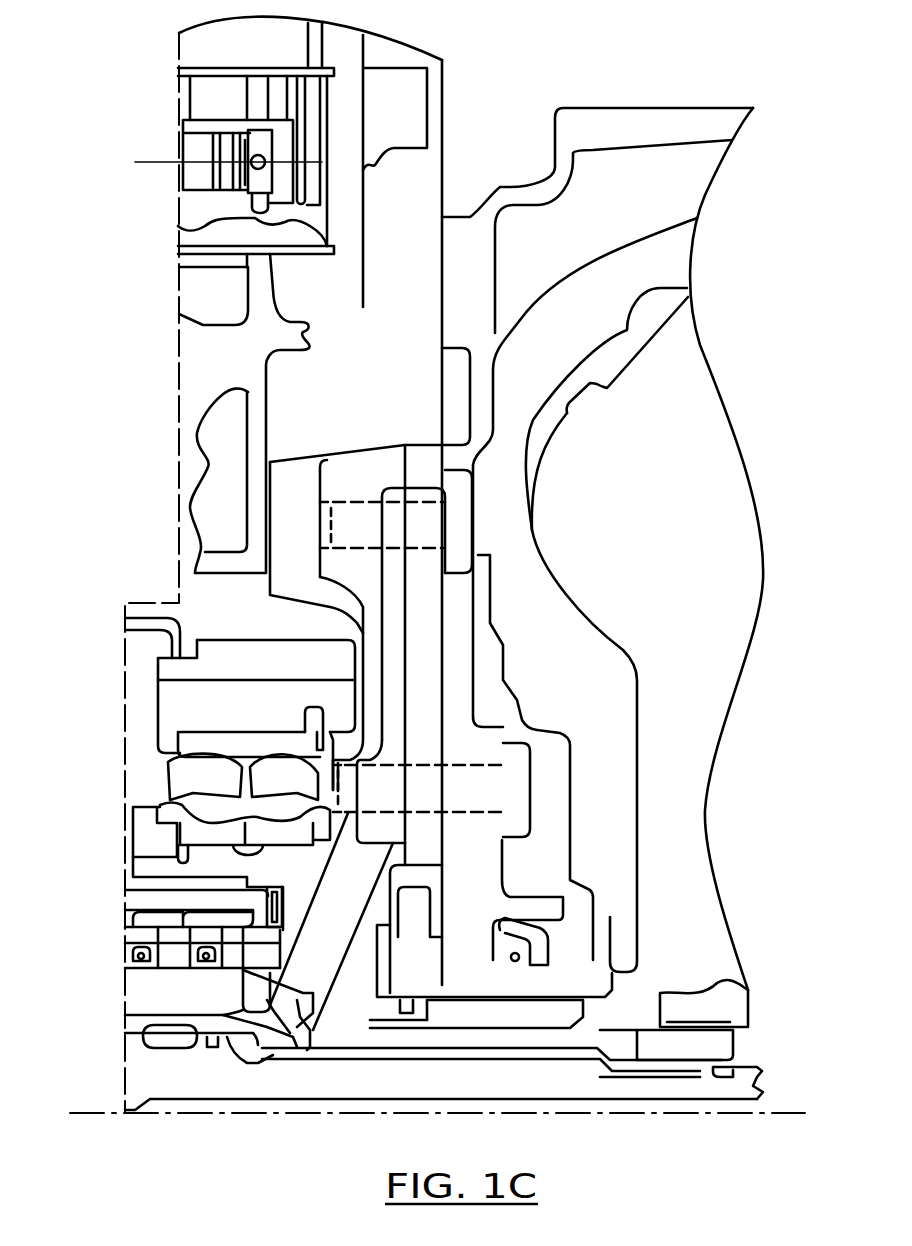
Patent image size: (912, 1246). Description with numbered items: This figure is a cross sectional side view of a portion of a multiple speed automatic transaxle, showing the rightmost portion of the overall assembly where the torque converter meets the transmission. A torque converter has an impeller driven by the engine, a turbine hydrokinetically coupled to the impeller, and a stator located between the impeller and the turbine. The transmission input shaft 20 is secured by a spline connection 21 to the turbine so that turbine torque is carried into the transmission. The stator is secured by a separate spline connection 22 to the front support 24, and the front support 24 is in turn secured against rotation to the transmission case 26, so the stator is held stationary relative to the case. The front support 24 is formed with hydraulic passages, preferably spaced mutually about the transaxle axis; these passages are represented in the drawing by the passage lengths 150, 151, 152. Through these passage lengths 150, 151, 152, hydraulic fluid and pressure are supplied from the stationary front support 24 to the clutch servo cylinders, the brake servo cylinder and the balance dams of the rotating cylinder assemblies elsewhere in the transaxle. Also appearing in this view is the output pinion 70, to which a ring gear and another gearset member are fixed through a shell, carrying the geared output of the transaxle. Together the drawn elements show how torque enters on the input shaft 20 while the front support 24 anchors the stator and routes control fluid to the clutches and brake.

The transmission input shaft 20 is at (352, 1090).
The spline connection 21 is at (735, 1070).
The spline connection 22 is at (678, 1027).
The front support 24 is at (343, 477).
The transmission case 26 is at (303, 342).
The output pinion 70 is at (232, 657).
The passage length 150 is at (363, 904).
The passage length 151 is at (267, 1020).
The passage length 152 is at (205, 1003).